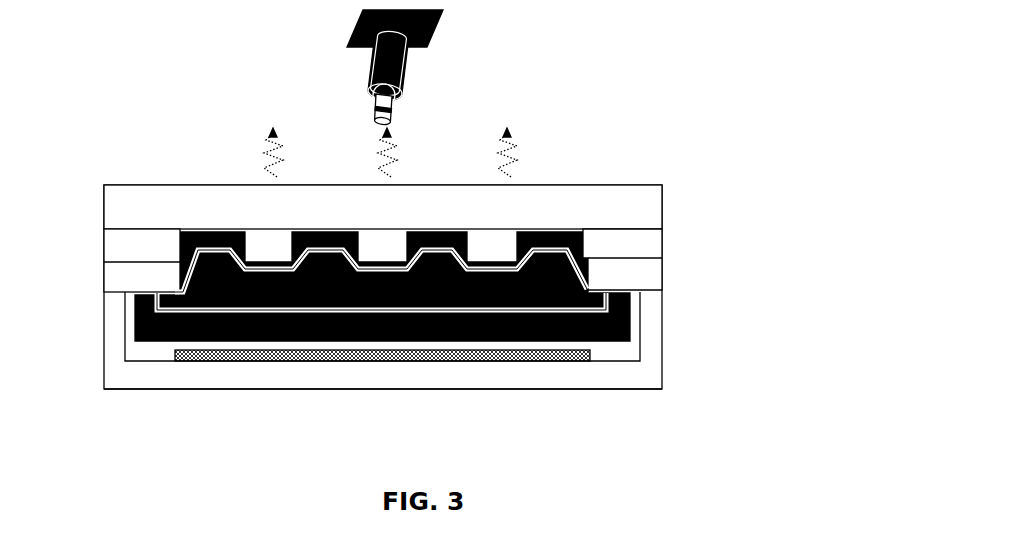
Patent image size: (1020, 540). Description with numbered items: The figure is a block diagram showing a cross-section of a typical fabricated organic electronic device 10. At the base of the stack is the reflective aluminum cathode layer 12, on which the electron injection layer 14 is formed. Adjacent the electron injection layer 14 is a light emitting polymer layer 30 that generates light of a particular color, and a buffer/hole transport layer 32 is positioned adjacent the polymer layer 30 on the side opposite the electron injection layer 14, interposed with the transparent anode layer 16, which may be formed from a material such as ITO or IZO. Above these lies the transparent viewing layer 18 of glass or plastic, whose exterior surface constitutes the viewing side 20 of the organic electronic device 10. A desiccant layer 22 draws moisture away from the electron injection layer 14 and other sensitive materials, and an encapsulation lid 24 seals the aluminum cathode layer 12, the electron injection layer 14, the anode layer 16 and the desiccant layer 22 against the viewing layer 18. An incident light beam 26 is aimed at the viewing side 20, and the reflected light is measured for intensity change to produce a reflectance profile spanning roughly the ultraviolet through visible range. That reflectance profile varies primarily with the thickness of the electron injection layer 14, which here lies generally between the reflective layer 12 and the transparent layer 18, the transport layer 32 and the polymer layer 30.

The organic electronic device 10 is at (86, 231).
The aluminum cathode layer 12 is at (190, 337).
The electron injection layer 14 is at (162, 313).
The transparent anode layer 16 is at (643, 245).
The transparent viewing layer 18 is at (623, 202).
The viewing side 20 is at (473, 178).
The desiccant layer 22 is at (215, 365).
The encapsulation lid 24 is at (590, 378).
The incident light beam 26 is at (354, 83).
The light emitting polymer layer 30 is at (573, 297).
The buffer/hole transport layer 32 is at (587, 252).